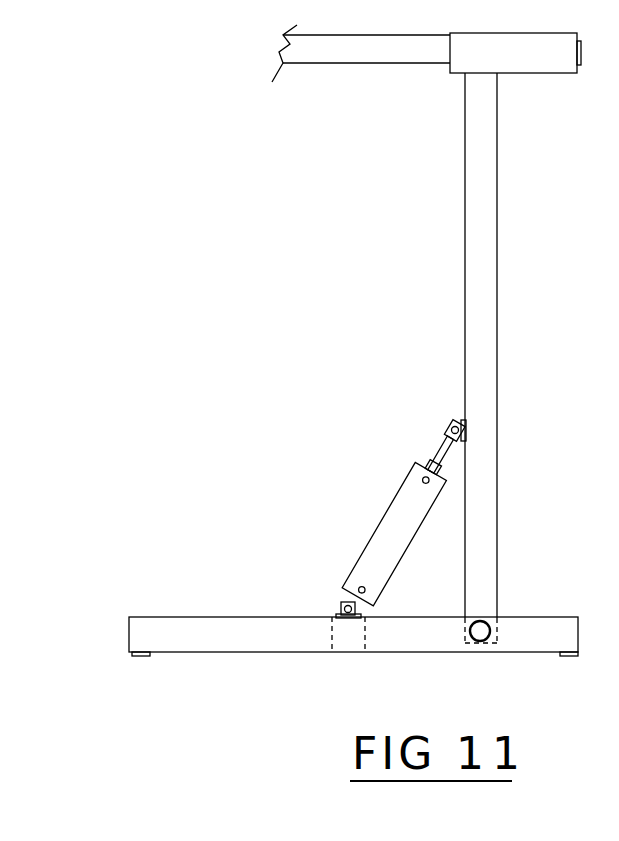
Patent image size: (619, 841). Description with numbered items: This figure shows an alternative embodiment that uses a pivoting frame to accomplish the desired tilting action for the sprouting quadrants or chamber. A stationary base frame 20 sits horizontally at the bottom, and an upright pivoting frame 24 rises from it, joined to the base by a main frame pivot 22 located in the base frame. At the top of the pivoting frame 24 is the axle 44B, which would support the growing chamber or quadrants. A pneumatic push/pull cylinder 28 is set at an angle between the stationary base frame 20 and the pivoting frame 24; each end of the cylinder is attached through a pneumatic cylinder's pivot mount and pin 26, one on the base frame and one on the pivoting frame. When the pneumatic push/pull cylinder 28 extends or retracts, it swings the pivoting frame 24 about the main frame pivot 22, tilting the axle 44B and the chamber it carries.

The axle 44B is at (340, 59).
The pivoting frame 24 is at (490, 219).
The stationary base frame 20 is at (250, 643).
The main frame pivot 22 is at (490, 640).
The pneumatic push/pull cylinder 28 is at (383, 508).
The pneumatic cylinder's pivot mount and pin 26 is at (449, 422).